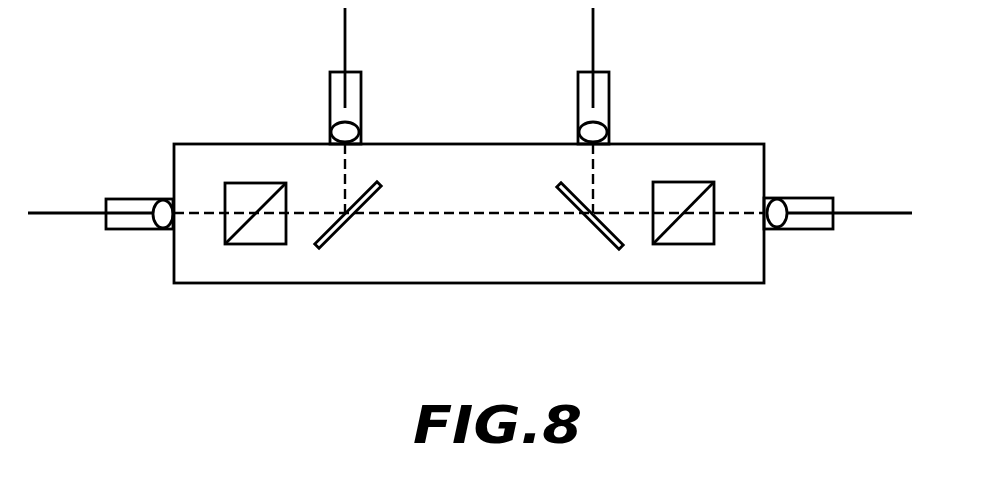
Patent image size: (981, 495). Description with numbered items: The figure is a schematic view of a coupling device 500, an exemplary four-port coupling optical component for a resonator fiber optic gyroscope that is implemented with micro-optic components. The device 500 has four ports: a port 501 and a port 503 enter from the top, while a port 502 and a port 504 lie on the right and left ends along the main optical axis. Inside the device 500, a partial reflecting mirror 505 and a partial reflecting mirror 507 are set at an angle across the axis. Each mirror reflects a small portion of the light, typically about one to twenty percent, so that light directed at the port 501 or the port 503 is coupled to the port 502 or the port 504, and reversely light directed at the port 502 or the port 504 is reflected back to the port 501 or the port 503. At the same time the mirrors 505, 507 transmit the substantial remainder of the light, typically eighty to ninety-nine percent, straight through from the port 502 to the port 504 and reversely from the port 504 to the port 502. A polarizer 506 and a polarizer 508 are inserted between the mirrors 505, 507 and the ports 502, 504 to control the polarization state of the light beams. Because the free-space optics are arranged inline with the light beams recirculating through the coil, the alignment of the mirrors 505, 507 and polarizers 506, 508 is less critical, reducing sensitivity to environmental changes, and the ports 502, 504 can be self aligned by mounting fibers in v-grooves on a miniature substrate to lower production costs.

The coupling device 500 is at (738, 144).
The port 501 is at (610, 98).
The port 502 is at (806, 198).
The port 503 is at (361, 98).
The port 504 is at (147, 199).
The partial reflecting mirror 505 is at (605, 248).
The polarizer 506 is at (685, 244).
The partial reflecting mirror 507 is at (333, 248).
The polarizer 508 is at (253, 244).